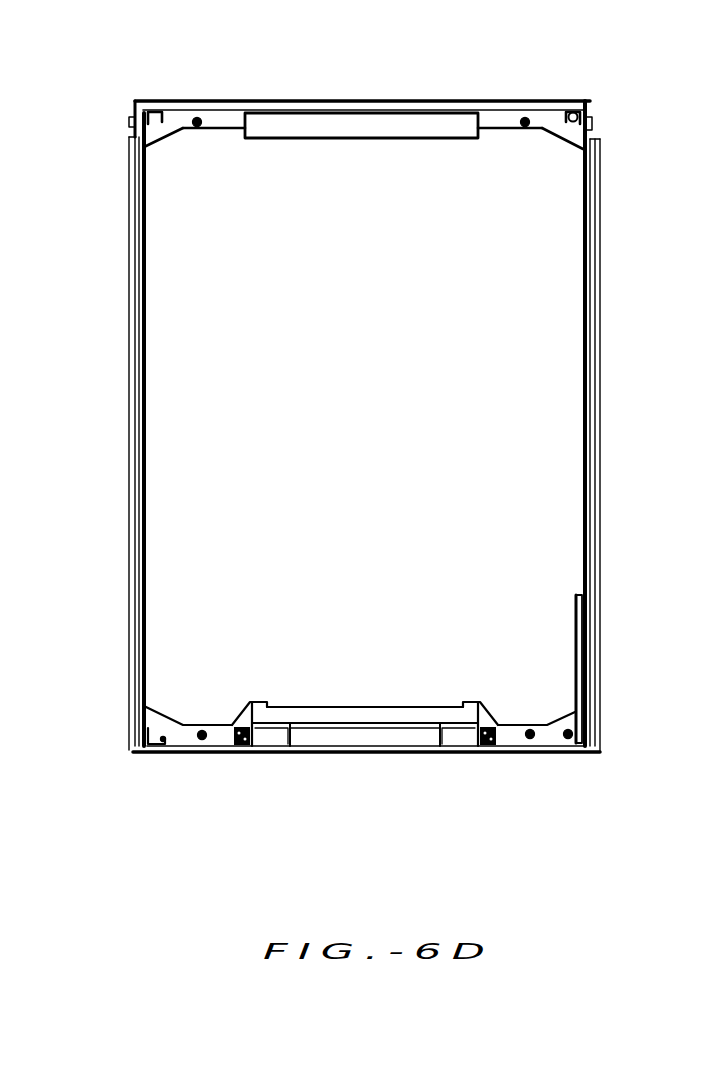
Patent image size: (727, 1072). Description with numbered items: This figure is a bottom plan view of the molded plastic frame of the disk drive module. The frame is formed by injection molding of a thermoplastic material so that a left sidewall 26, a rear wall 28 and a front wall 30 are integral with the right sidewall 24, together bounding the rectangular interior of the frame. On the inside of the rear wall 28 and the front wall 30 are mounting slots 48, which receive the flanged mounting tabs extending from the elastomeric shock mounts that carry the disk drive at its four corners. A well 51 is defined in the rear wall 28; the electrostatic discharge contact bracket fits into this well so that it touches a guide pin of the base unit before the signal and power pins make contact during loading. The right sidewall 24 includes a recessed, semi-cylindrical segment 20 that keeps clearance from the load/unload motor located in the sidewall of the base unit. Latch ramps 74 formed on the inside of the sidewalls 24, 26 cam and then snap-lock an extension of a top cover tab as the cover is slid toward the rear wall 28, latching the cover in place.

The recessed semi-cylindrical segment 20 is at (579, 633).
The right sidewall 24 is at (596, 357).
The left sidewall 26 is at (128, 424).
The rear wall 28 is at (362, 740).
The front wall 30 is at (388, 100).
The mounting slots 48 is at (208, 113).
The well 51 is at (268, 745).
The latch ramps 74 is at (147, 326).